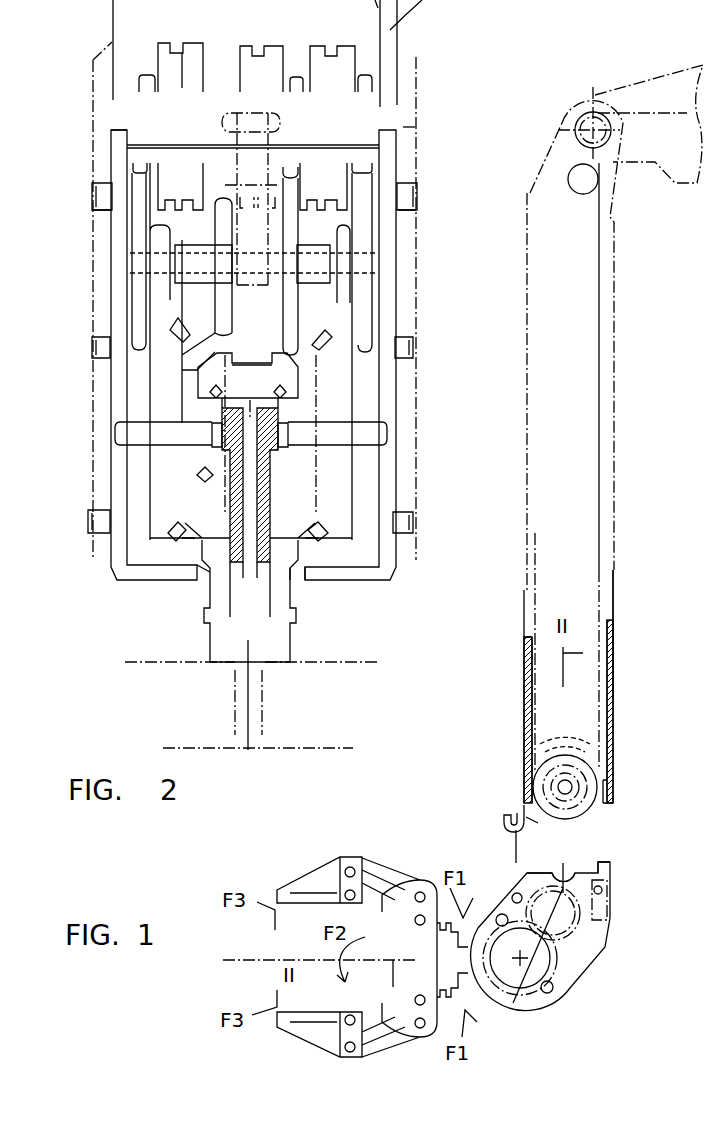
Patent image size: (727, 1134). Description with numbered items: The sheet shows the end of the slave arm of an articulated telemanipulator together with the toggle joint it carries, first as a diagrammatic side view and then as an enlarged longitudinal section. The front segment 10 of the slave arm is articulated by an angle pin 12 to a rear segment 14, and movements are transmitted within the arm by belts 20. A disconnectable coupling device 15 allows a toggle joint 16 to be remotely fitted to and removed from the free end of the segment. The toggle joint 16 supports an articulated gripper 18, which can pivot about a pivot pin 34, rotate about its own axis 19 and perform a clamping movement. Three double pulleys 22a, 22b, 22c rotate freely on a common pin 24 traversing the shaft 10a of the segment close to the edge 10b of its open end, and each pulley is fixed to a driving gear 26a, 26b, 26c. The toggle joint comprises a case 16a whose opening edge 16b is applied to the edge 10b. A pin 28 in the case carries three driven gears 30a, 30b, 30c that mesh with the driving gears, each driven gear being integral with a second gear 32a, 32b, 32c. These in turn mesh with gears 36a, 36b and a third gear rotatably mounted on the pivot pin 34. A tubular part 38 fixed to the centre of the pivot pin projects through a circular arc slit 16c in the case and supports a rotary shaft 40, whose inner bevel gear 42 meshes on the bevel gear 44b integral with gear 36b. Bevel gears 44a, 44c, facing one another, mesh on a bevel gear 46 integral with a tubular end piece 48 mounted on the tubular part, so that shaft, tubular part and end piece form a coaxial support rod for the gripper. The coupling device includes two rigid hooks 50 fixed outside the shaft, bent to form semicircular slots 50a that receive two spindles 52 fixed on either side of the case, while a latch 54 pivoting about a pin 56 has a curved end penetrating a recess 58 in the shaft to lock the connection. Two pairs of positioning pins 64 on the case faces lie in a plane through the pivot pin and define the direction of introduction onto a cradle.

In FIG. 1, the front segment 10 is at (613, 520).
In FIG. 1, the shaft 10a is at (613, 680).
In FIG. 1, the edge of the open end of the shaft 10b is at (608, 807).
In FIG. 1, the angle pin 12 is at (593, 85).
In FIG. 1, the rear segment 14 is at (665, 67).
In FIG. 2, the disconnectable coupling device 15 is at (80, 145).
In FIG. 1, the disconnectable coupling device 15 is at (610, 838).
In FIG. 2, the toggle joint 16 is at (113, 578).
In FIG. 1, the toggle joint 16 is at (605, 953).
In FIG. 2, the toggle joint case 16a is at (373, 580).
In FIG. 1, the edge of the opening 16b is at (530, 873).
In FIG. 2, the circular arc slit 16c is at (302, 578).
In FIG. 1, the articulated gripper 18 is at (398, 870).
In FIG. 2, the axis 19 is at (247, 690).
In FIG. 1, the axis 19 is at (238, 960).
In FIG. 1, the belts 20 is at (599, 552).
In FIG. 2, the double pulley 22a is at (187, 45).
In FIG. 1, the double pulley 22a is at (580, 767).
In FIG. 2, the double pulley 22b is at (262, 46).
In FIG. 1, the double pulley 22b is at (572, 755).
In FIG. 2, the double pulley 22c is at (340, 46).
In FIG. 1, the double pulley 22c is at (562, 742).
In FIG. 2, the common pin 24 is at (415, 127).
In FIG. 1, the common pin 24 is at (552, 783).
In FIG. 2, the driving gear 26a is at (143, 75).
In FIG. 2, the driving gear 26b is at (296, 77).
In FIG. 2, the driving gear 26c is at (372, 76).
In FIG. 2, the pin 28 is at (343, 262).
In FIG. 2, the driven gear 30a is at (143, 353).
In FIG. 2, the driven gear 30b is at (287, 358).
In FIG. 2, the driven gear 30c is at (362, 353).
In FIG. 2, the second gear 32a is at (150, 243).
In FIG. 2, the second gear 32b is at (262, 172).
In FIG. 2, the second gear 32c is at (343, 290).
In FIG. 2, the pivot pin 34 is at (130, 435).
In FIG. 1, the pivot pin 34 is at (520, 960).
In FIG. 2, the gear 36a is at (160, 558).
In FIG. 2, the gear 36b is at (207, 570).
In FIG. 2, the tubular part 38 is at (250, 540).
In FIG. 2, the shaft 40 is at (253, 505).
In FIG. 2, the bevel gear 42 is at (297, 367).
In FIG. 2, the bevel gear 44a is at (177, 333).
In FIG. 2, the bevel gear 44b is at (197, 468).
In FIG. 2, the bevel gear 44c is at (322, 328).
In FIG. 2, the bevel gear 46 is at (180, 542).
In FIG. 2, the tubular end piece 48 is at (217, 630).
In FIG. 2, the rigid hook 50 is at (92, 112).
In FIG. 1, the rigid hook 50 is at (513, 823).
In FIG. 2, the semicircular slot 50a is at (92, 205).
In FIG. 2, the spindle 52 is at (92, 188).
In FIG. 1, the spindle 52 is at (513, 892).
In FIG. 2, the latch 54 is at (100, 110).
In FIG. 1, the latch 54 is at (612, 866).
In FIG. 1, the pin 56 is at (612, 890).
In FIG. 2, the recess 58 is at (405, 108).
In FIG. 1, the recess 58 is at (607, 790).
In FIG. 2, the positioning pins 64 is at (92, 347).
In FIG. 1, the positioning pins 64 is at (503, 925).